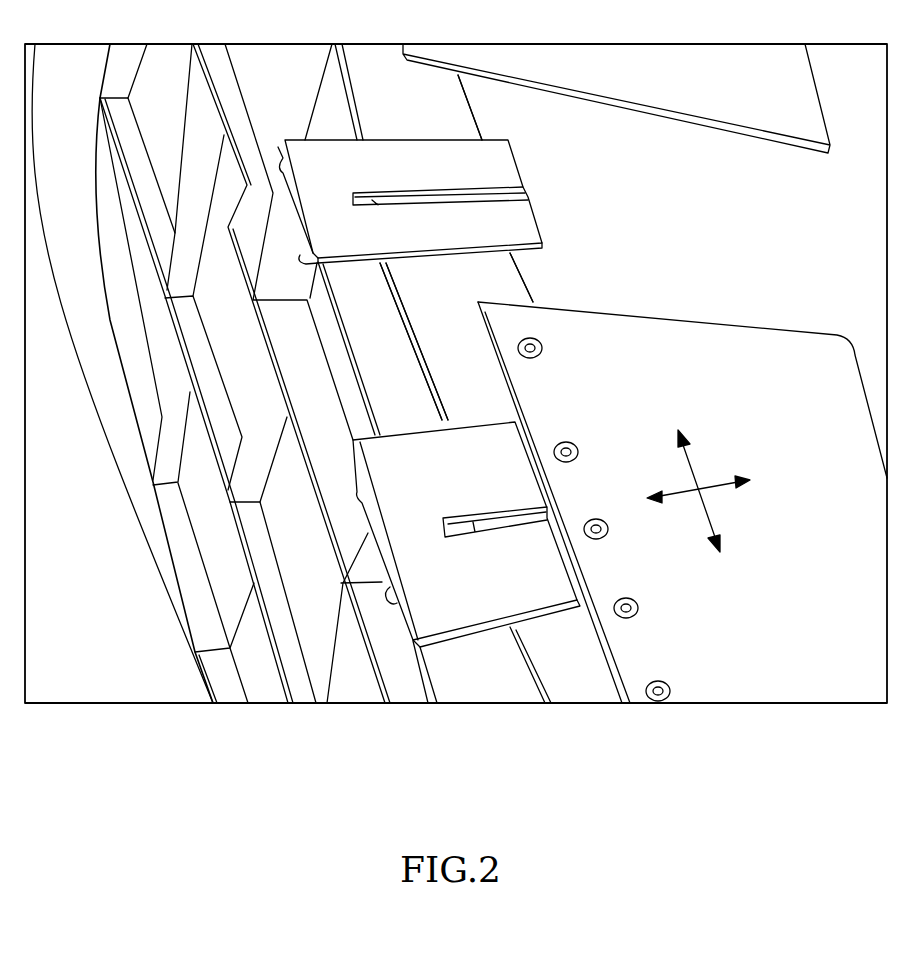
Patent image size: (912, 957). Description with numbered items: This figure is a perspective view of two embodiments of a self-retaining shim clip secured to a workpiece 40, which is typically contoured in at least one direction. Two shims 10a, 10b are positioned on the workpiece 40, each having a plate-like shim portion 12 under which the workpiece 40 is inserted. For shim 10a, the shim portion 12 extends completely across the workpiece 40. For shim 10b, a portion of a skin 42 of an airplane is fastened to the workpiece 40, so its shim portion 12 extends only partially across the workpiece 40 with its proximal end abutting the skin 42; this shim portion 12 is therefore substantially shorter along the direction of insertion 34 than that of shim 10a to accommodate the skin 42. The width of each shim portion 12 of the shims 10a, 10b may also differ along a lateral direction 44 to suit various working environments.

The shim portion 12 is at (388, 157).
The shim 10a is at (470, 266).
The shim 10b is at (468, 408).
The workpiece 40 is at (442, 300).
The skin 42 is at (533, 372).
The lateral direction 44 is at (692, 463).
The direction of insertion 34 is at (715, 488).